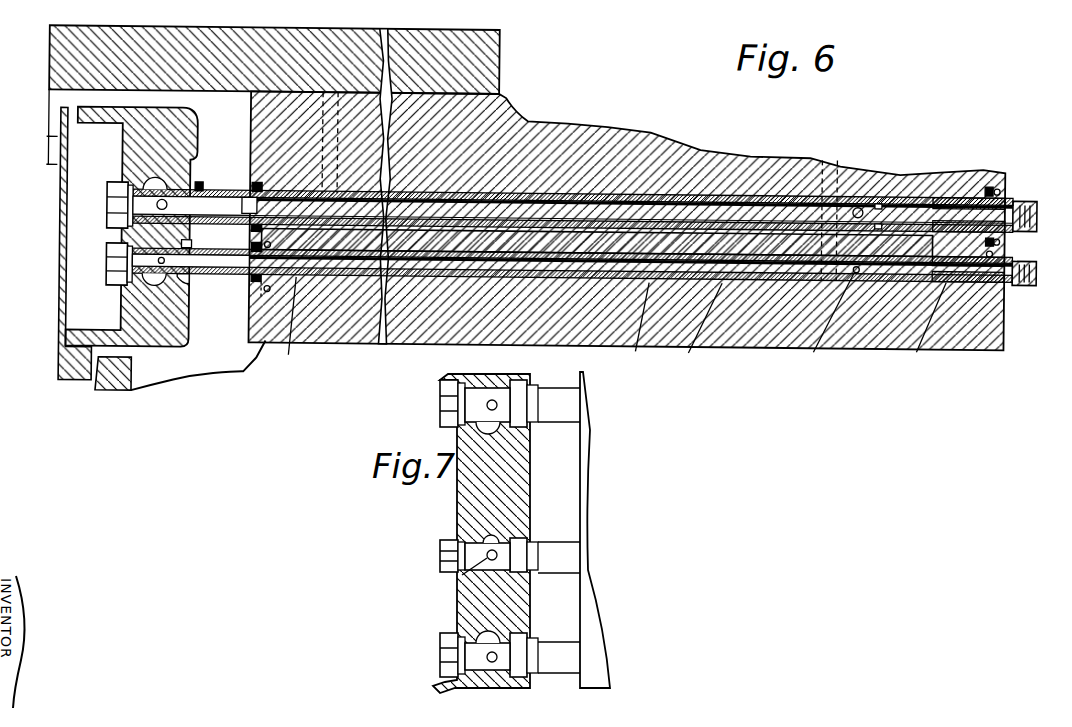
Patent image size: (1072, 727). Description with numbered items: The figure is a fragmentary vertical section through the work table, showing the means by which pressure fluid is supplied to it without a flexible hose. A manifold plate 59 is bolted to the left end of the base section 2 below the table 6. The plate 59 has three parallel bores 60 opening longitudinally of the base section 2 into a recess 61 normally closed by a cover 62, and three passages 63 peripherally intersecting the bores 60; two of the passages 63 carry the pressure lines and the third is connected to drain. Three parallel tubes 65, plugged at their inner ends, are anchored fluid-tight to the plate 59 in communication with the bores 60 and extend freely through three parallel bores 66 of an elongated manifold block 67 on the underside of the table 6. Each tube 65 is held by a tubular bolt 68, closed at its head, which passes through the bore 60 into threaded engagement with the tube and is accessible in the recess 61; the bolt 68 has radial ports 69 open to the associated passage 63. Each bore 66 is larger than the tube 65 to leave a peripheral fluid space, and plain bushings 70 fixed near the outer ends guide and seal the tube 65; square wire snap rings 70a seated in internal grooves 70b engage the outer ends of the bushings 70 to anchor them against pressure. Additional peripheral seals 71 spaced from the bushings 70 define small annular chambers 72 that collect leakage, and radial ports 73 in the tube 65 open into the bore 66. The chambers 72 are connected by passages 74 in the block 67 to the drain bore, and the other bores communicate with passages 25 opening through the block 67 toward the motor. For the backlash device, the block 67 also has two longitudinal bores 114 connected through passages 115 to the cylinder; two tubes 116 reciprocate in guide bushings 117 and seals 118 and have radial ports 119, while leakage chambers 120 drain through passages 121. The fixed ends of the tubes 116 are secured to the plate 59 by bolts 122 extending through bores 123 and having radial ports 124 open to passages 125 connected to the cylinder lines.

In FIG. 6, the base section 2 is at (103, 391).
In FIG. 6, the table 6 is at (503, 73).
In FIG. 6, the bore line 25 is at (337, 147).
In FIG. 6, the manifold plate 59 is at (188, 344).
In FIG. 7, the manifold plate 59 is at (522, 473).
In FIG. 6, the bores 60 is at (198, 187).
In FIG. 7, the bores 60 is at (528, 437).
In FIG. 6, the recess 61 is at (80, 277).
In FIG. 6, the cover 62 is at (60, 254).
In FIG. 6, the passages 63 is at (125, 179).
In FIG. 7, the passages 63 is at (490, 440).
In FIG. 6, the tubes 65 is at (567, 196).
In FIG. 7, the tubes 65 is at (558, 396).
In FIG. 6, the bores 66 is at (613, 196).
In FIG. 6, the manifold block 67 is at (500, 334).
In FIG. 7, the manifold block 67 is at (590, 605).
In FIG. 6, the bolt 68 is at (110, 201).
In FIG. 7, the bolt 68 is at (447, 402).
In FIG. 6, the radial ports 69 is at (167, 209).
In FIG. 7, the radial ports 69 is at (493, 400).
In FIG. 6, the plain bushings 70 is at (290, 194).
In FIG. 6, the square wire snap rings 70a is at (1001, 192).
In FIG. 6, the internal grooves 70b is at (982, 193).
In FIG. 6, the peripheral seals 71 is at (256, 190).
In FIG. 6, the annular chambers 72 is at (263, 200).
In FIG. 6, the radial ports 73 is at (878, 224).
In FIG. 6, the passages 74 is at (252, 243).
In FIG. 6, the longitudinal bores 114 is at (635, 325).
In FIG. 6, the passages 115 is at (808, 157).
In FIG. 6, the tubes 116 is at (698, 326).
In FIG. 7, the tubes 116 is at (545, 565).
In FIG. 6, the guide bushings 117 is at (610, 328).
In FIG. 6, the seals 118 is at (252, 281).
In FIG. 6, the radial ports 119 is at (832, 320).
In FIG. 6, the leakage chambers 120 is at (252, 295).
In FIG. 6, the passages 121 is at (255, 310).
In FIG. 6, the bolts 122 is at (107, 257).
In FIG. 7, the bolts 122 is at (440, 555).
In FIG. 6, the bores 123 is at (189, 290).
In FIG. 7, the bores 123 is at (528, 534).
In FIG. 6, the radial ports 124 is at (186, 246).
In FIG. 7, the radial ports 124 is at (460, 577).
In FIG. 6, the passages 125 is at (128, 286).
In FIG. 7, the passages 125 is at (467, 535).